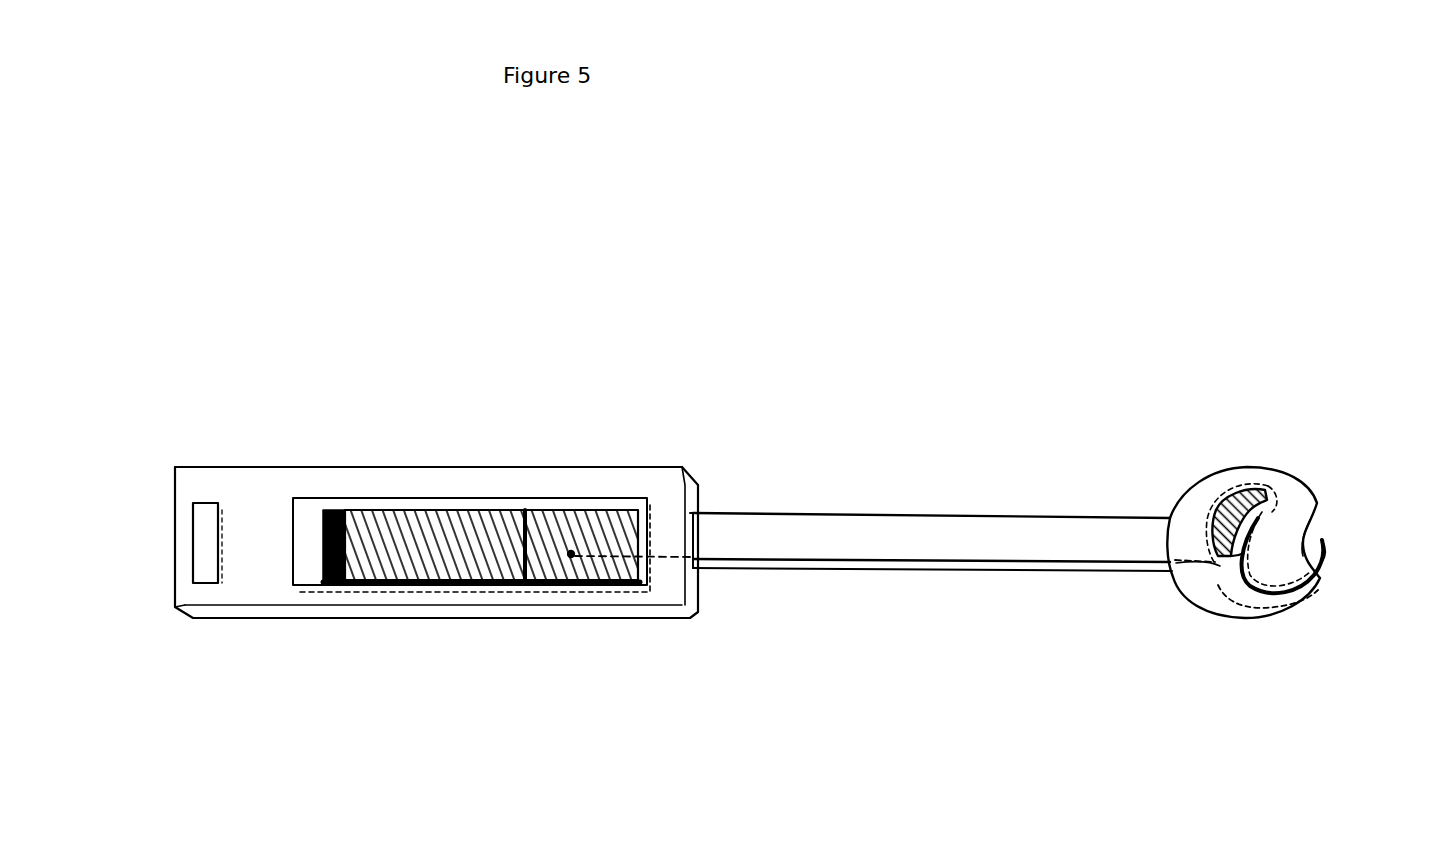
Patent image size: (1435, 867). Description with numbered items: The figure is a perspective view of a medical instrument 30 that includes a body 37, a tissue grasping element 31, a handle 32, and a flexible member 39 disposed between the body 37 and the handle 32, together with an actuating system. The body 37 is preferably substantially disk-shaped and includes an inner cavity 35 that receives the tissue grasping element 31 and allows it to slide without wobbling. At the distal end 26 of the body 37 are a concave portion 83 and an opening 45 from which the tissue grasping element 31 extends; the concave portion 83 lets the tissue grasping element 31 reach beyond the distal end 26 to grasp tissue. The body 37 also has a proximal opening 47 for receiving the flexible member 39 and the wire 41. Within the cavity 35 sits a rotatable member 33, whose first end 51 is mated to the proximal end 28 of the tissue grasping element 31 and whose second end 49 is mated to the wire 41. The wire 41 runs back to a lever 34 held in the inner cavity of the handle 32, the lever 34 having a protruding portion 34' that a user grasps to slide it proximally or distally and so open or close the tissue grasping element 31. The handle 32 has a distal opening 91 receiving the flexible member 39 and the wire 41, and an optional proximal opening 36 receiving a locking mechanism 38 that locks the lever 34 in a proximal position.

The distal end 26 is at (1350, 459).
The proximal end 28 is at (153, 450).
The medical instrument 30 is at (305, 276).
The tissue grasping element 31 is at (1327, 553).
The handle 32 is at (293, 467).
The rotatable member 33 is at (1242, 497).
The lever 34 is at (481, 589).
The protruding portion 34' is at (629, 488).
The inner cavity 35 is at (1230, 595).
The proximal opening 36 is at (203, 565).
The body 37 is at (1208, 606).
The locking mechanism 38 is at (342, 583).
The flexible member 39 is at (968, 514).
The wire 41 is at (805, 566).
The opening 45 is at (1318, 579).
The proximal opening 47 is at (1170, 540).
The second end 49 is at (1262, 497).
The first end 51 is at (1232, 556).
The concave portion 83 is at (1313, 519).
The distal opening 91 is at (698, 513).